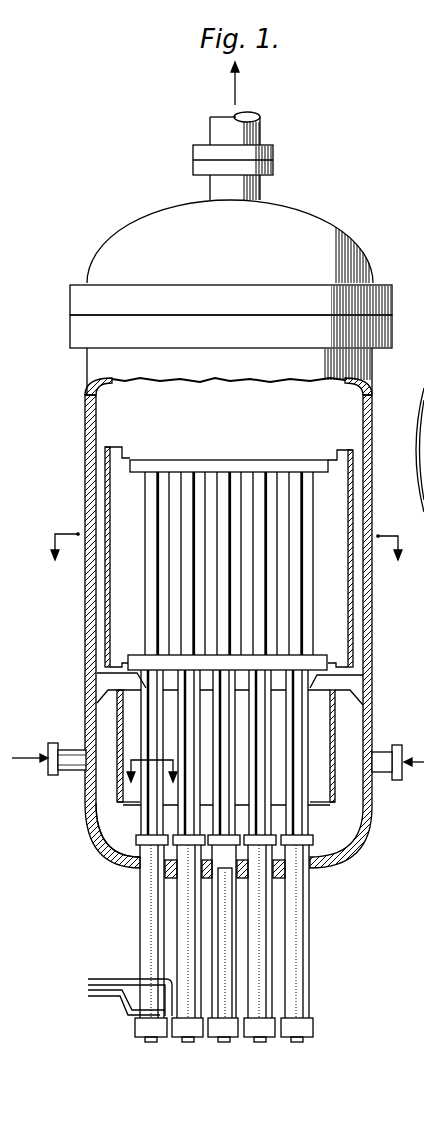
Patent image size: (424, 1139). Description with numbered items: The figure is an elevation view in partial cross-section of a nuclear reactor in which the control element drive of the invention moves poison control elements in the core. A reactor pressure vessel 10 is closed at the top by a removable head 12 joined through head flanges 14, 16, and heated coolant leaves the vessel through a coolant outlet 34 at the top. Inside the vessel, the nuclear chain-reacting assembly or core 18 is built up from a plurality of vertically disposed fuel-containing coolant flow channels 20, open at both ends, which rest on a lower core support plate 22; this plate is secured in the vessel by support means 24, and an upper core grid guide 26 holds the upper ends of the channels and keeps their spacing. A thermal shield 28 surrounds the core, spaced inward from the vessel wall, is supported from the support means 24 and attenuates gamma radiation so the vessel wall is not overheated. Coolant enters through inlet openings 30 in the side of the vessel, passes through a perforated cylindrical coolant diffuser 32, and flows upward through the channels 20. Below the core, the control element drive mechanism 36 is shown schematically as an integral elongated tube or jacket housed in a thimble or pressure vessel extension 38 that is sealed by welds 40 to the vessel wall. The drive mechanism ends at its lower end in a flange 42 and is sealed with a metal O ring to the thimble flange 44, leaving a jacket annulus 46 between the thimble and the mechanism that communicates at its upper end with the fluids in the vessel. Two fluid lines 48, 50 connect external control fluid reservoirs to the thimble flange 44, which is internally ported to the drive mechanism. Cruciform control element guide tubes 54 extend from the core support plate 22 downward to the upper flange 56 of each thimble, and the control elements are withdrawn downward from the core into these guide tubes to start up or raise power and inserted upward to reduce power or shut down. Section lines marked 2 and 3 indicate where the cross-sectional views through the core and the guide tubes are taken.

The section line 2- 2 is at (225, 537).
The section line 3- 3 is at (150, 761).
The reactor pressure vessel 10 is at (95, 368).
The removable head 12 is at (307, 225).
The head flange 14 is at (82, 298).
The head flange 16 is at (82, 330).
The nuclear chain-reacting assembly or core 18 is at (315, 622).
The coolant flow channels 20 is at (160, 592).
The lower core support plate 22 is at (130, 660).
The support means 24 is at (97, 683).
The upper core grid guide 26 is at (163, 462).
The thermal shield 28 is at (105, 490).
The inlet openings 30 is at (78, 770).
The coolant diffuser 32 is at (337, 735).
The coolant outlet 34 is at (262, 125).
The control element drive mechanism 36 is at (222, 973).
The thimble or pressure vessel extension 38 is at (222, 917).
The welds 40 is at (312, 862).
The flange 42 is at (232, 1032).
The thimble flange 44 is at (180, 1025).
The jacket annulus 46 is at (213, 912).
The fluid line 48 is at (110, 978).
The fluid line 50 is at (100, 992).
The control element guide tube 54 is at (140, 820).
The upper flange 56 is at (138, 852).